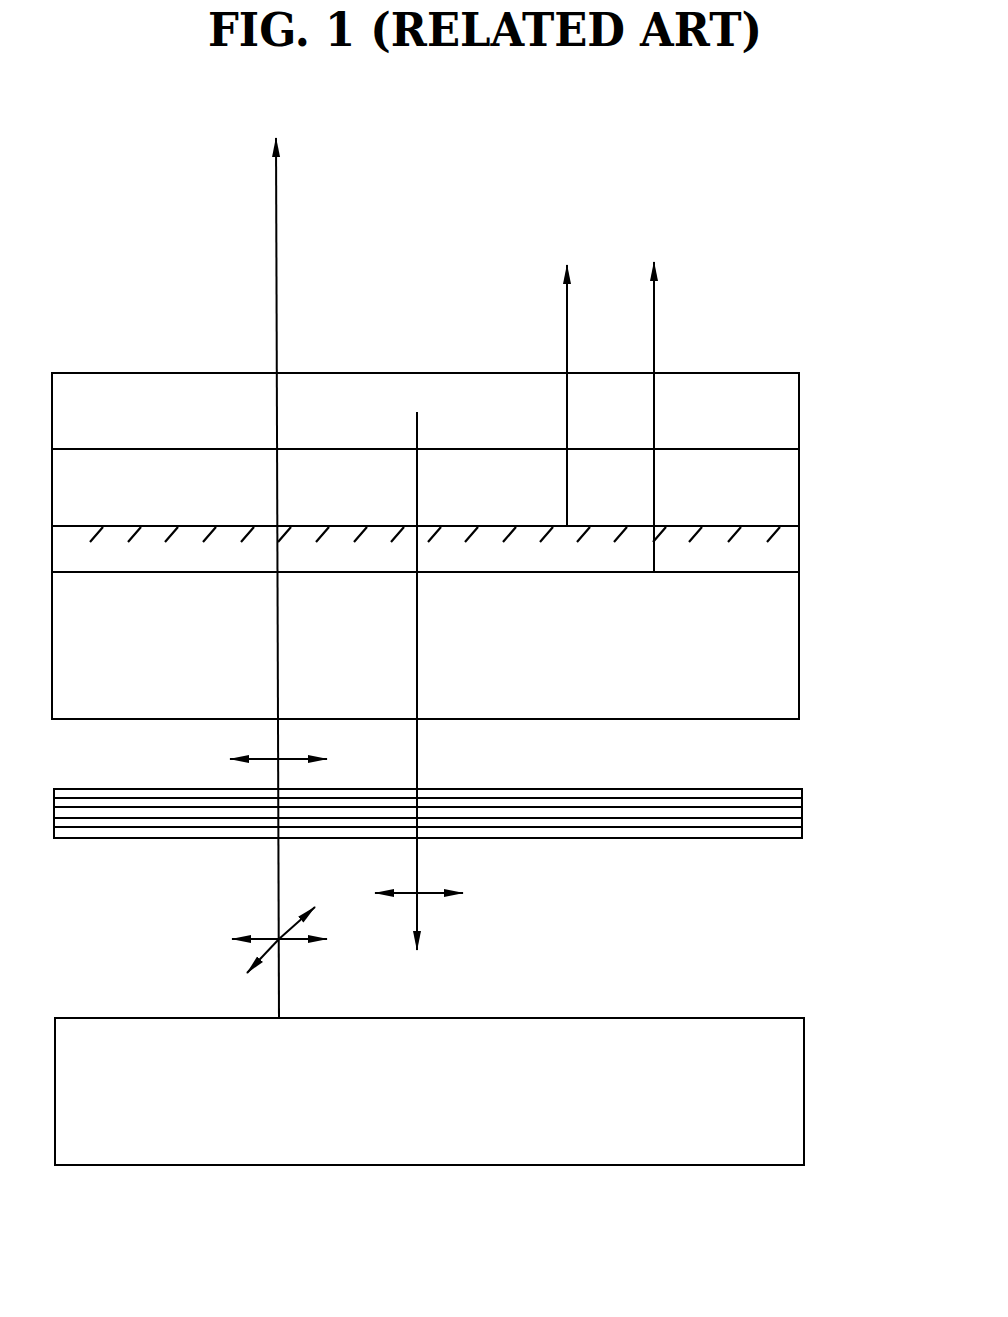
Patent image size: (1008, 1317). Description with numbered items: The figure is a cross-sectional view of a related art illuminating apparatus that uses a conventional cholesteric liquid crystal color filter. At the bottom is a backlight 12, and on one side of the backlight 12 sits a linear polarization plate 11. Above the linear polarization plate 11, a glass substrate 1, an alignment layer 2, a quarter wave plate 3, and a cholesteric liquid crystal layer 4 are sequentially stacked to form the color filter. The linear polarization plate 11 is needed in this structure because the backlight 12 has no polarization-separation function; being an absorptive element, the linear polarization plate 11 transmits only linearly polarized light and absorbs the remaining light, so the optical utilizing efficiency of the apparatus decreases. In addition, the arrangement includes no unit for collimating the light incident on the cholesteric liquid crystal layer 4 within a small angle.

The glass substrate 1 is at (778, 634).
The alignment layer 2 is at (778, 557).
The quarter wave plate 3 is at (778, 480).
The cholesteric liquid crystal layer 4 is at (778, 404).
The linear polarization plate 11 is at (785, 808).
The backlight 12 is at (783, 1080).